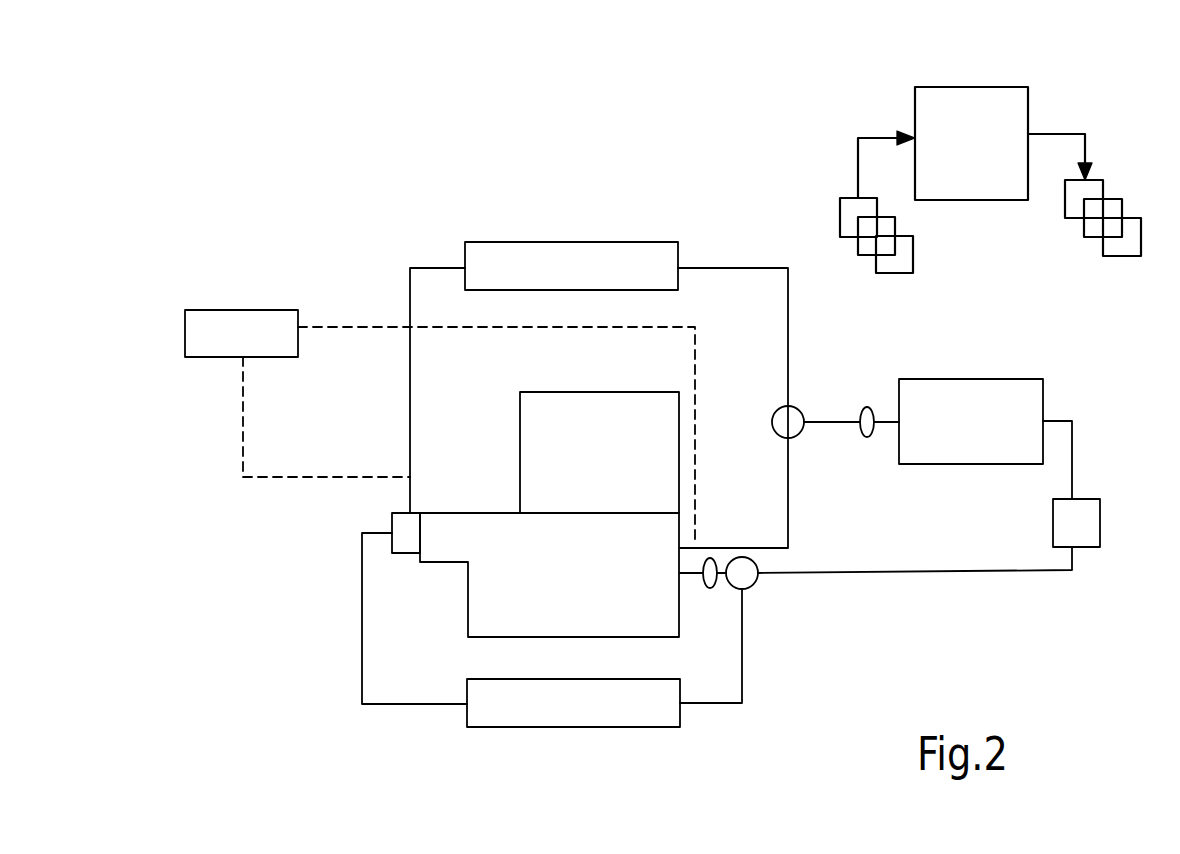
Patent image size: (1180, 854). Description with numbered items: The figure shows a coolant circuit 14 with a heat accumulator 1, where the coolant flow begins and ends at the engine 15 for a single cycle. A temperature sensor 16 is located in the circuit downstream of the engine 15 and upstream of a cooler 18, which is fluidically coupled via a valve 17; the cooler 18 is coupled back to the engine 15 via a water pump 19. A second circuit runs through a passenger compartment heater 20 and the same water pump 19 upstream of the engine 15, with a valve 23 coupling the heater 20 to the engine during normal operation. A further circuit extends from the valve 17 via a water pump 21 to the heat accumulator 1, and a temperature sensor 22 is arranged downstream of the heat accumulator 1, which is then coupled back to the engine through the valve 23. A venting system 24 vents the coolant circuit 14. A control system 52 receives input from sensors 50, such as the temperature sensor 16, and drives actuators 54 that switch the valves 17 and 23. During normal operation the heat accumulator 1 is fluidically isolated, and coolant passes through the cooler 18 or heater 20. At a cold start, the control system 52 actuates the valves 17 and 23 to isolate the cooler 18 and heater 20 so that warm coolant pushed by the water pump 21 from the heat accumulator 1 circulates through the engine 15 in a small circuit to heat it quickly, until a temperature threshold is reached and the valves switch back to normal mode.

The heat accumulator 1 is at (985, 378).
The coolant circuit 14 is at (775, 703).
The engine 15 is at (620, 610).
The temperature sensor 16 is at (708, 590).
The valve 17 is at (742, 578).
The cooler 18 is at (653, 718).
The water pump 19 is at (432, 553).
The passenger compartment heater 20 is at (609, 250).
The water pump 21 is at (1090, 527).
The temperature sensor 22 is at (866, 410).
The valve 23 is at (785, 418).
The venting system 24 is at (215, 320).
The sensors 50 is at (889, 235).
The control system 52 is at (971, 143).
The actuators 54 is at (1100, 228).